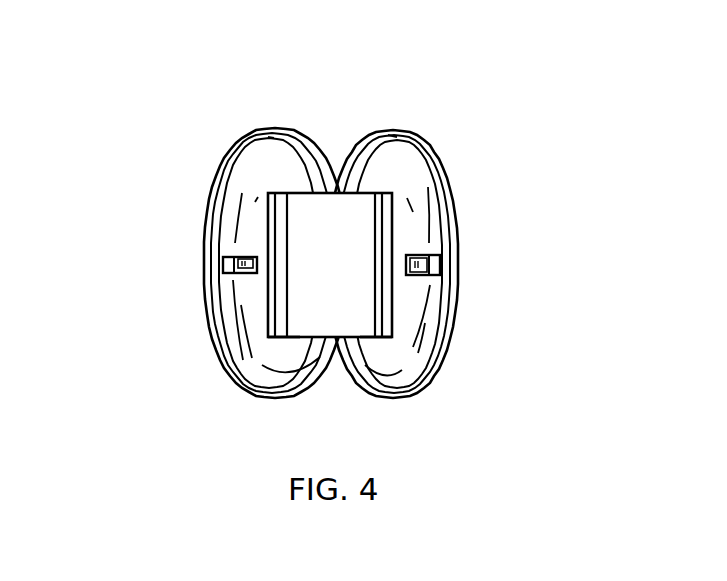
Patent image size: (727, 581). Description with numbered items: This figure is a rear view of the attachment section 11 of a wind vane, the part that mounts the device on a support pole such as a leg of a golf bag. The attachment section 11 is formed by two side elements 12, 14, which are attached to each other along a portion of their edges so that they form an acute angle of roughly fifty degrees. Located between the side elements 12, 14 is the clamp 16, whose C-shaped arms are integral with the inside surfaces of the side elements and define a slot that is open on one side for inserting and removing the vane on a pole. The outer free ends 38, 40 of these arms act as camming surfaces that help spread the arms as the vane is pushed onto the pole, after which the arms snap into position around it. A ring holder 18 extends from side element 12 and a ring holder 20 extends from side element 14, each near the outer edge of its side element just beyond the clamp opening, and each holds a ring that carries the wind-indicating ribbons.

The attachment section 11 is at (447, 106).
The side element 12 is at (458, 253).
The side element 14 is at (207, 205).
The clamp 16 is at (360, 218).
The ring holder 18 is at (436, 273).
The ring holder 20 is at (228, 268).
The outer free end 38 is at (385, 338).
The outer free end 40 is at (280, 337).